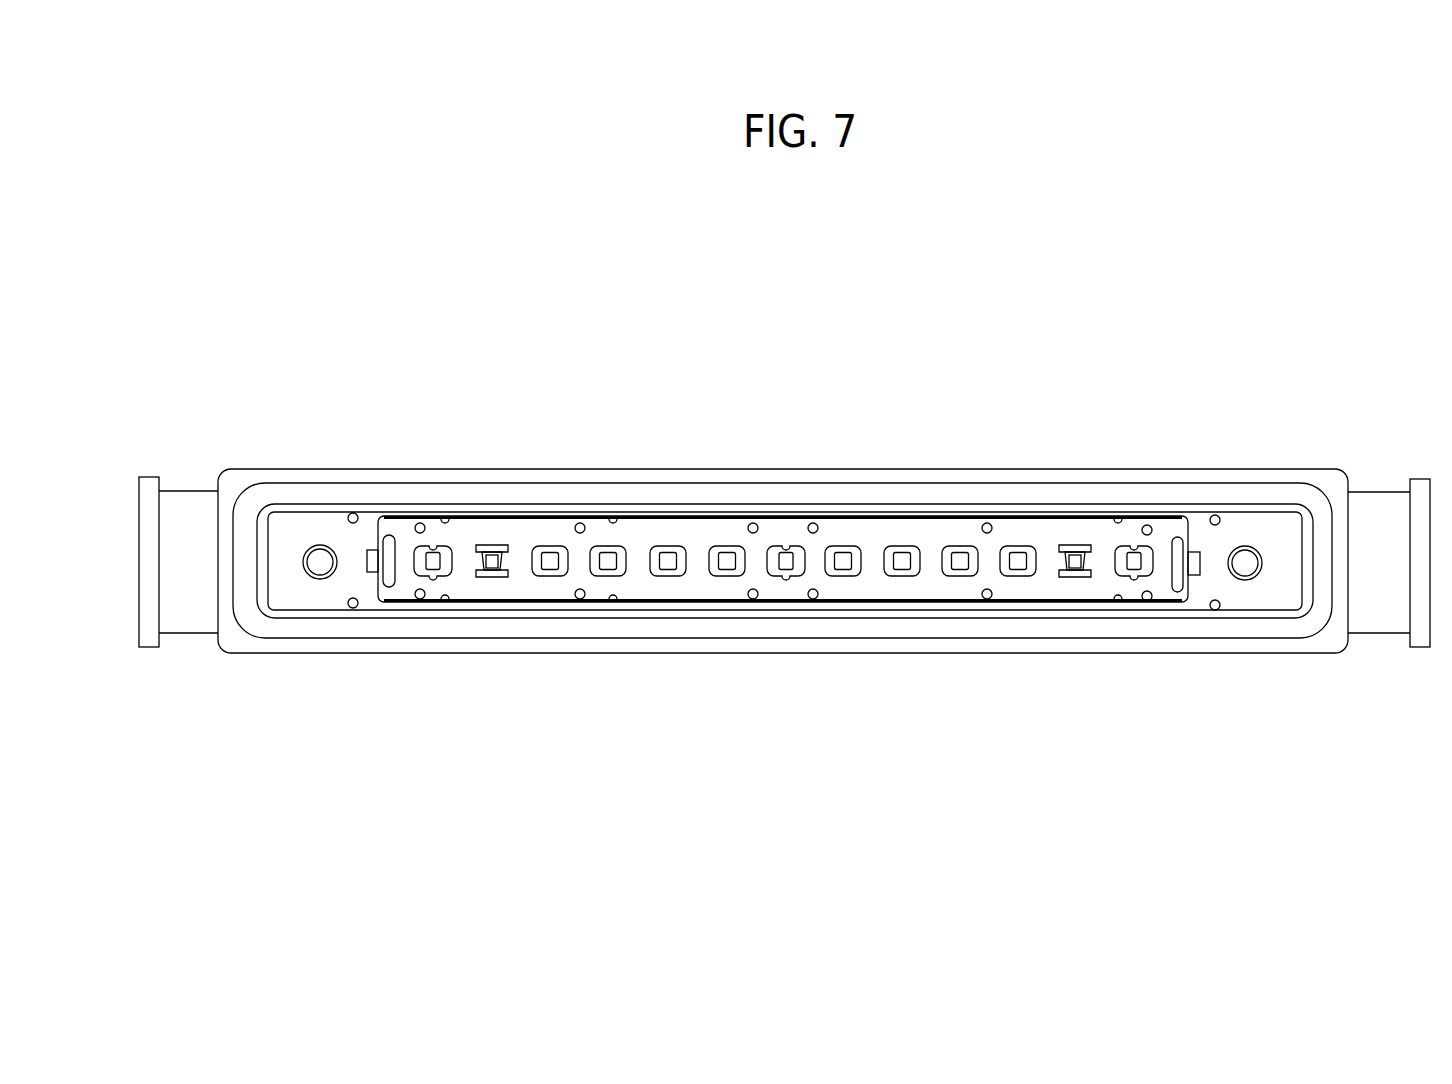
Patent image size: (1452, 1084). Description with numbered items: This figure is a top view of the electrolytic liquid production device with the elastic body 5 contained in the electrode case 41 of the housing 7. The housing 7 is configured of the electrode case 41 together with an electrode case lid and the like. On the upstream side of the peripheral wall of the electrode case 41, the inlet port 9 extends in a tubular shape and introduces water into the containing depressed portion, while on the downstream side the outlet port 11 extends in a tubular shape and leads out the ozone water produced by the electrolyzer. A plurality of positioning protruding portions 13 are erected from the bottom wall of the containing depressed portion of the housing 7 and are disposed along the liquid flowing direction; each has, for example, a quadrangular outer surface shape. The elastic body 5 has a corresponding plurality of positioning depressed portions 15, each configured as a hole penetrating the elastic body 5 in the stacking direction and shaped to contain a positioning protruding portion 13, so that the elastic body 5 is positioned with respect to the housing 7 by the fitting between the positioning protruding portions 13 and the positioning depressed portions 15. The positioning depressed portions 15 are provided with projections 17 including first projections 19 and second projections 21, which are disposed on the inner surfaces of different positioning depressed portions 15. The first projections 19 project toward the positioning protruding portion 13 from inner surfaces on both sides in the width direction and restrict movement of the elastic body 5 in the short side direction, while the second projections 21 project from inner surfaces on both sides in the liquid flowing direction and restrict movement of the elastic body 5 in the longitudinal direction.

The elastic body 5 is at (933, 519).
The housing 7 is at (747, 470).
The inlet port 9 is at (1380, 514).
The outlet port 11 is at (183, 514).
The positioning protruding portion 13 is at (487, 560).
The positioning depressed portion 15 is at (499, 568).
The projection 17 is at (817, 554).
The first projection 19 is at (438, 555).
The second projection 21 is at (1092, 565).
The electrode case 41 is at (783, 477).